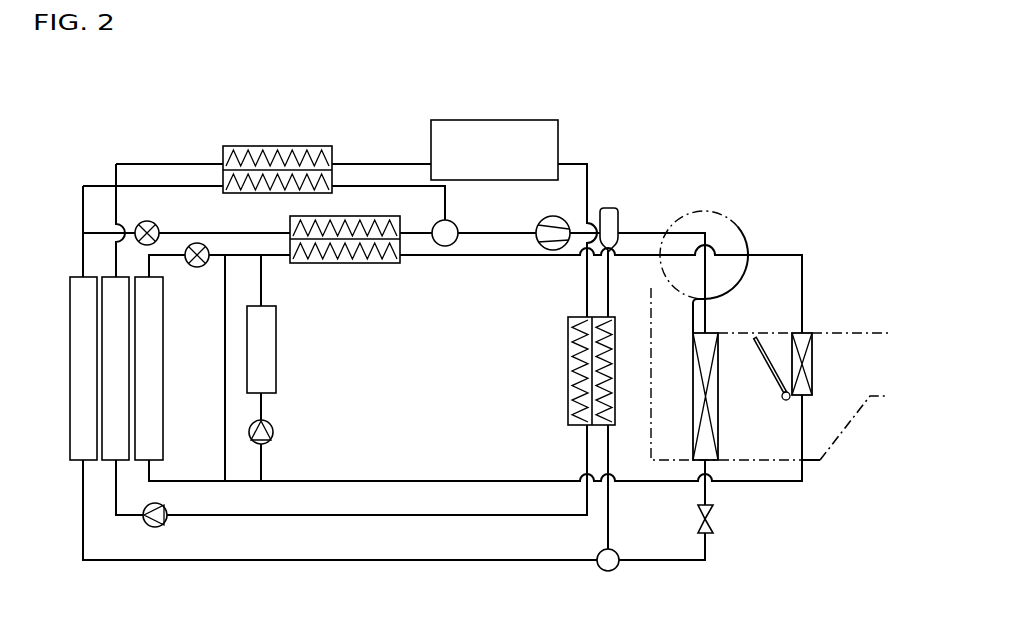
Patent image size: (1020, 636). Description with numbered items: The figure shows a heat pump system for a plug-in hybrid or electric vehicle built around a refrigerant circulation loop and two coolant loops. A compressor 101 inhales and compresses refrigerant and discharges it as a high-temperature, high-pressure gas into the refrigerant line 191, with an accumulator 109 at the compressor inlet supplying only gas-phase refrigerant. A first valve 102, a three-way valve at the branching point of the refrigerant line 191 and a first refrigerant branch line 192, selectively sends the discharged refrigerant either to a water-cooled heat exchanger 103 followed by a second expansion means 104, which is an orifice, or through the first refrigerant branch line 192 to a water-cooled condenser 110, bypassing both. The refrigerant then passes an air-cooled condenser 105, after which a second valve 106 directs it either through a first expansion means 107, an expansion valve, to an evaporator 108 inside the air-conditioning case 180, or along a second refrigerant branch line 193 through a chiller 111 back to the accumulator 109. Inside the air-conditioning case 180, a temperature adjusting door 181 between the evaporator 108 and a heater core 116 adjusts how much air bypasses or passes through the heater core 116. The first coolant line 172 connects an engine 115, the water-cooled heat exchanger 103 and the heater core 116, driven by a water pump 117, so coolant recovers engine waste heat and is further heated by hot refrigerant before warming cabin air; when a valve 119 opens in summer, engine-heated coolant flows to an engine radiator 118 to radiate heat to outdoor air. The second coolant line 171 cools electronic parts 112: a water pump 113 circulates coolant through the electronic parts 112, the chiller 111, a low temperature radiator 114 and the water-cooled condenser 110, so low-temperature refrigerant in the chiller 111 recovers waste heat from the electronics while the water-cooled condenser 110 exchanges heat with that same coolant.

The compressor 101 is at (550, 215).
The first valve 102 is at (447, 247).
The water-cooled heat exchanger 103 is at (345, 265).
The second expansion means 104 is at (152, 222).
The air-cooled condenser 105 is at (72, 462).
The second valve 106 is at (605, 572).
The first expansion means 107 is at (713, 527).
The evaporator 108 is at (720, 433).
The accumulator 109 is at (615, 207).
The water-cooled condenser 110 is at (278, 145).
The chiller 111 is at (568, 375).
The electronic parts 112 is at (510, 118).
The water pump 113 is at (163, 527).
The low temperature radiator 114 is at (108, 463).
The engine 115 is at (276, 368).
The heater core 116 is at (812, 362).
The water pump 117 is at (274, 430).
The engine radiator 118 is at (163, 368).
The valve 119 is at (197, 268).
The second coolant line 171 is at (590, 177).
The first coolant line 172 is at (363, 480).
The air-conditioning case 180 is at (847, 420).
The temperature adjusting door 181 is at (773, 365).
The refrigerant line 191 is at (520, 232).
The first refrigerant branch line 192 is at (377, 187).
The second refrigerant branch line 193 is at (610, 513).